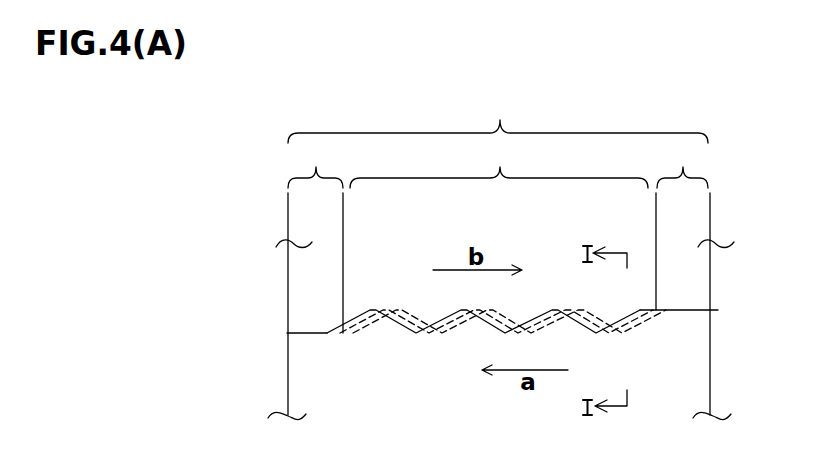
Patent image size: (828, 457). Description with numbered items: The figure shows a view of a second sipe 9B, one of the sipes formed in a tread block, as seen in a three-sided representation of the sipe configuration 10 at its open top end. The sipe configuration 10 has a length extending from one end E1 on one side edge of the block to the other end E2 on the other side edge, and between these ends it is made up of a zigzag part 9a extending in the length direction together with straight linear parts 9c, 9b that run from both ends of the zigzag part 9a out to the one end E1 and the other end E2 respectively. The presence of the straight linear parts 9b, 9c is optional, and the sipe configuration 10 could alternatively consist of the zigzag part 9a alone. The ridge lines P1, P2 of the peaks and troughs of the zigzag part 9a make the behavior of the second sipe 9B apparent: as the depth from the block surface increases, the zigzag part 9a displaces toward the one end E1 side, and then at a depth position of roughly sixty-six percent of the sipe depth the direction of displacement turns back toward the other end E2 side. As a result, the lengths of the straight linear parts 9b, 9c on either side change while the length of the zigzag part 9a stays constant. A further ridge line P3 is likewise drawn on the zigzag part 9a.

The second sipe 9B is at (498, 117).
The straight linear part 9b is at (305, 278).
The zigzag part 9a is at (503, 235).
The straight linear part 9c is at (695, 278).
The sipe configuration 10 is at (307, 330).
The other end E2 is at (290, 334).
The one end E1 is at (718, 311).
The ridge line P1 is at (327, 336).
The ridge line P2 is at (375, 312).
The third position on the corrugation P3 is at (417, 335).